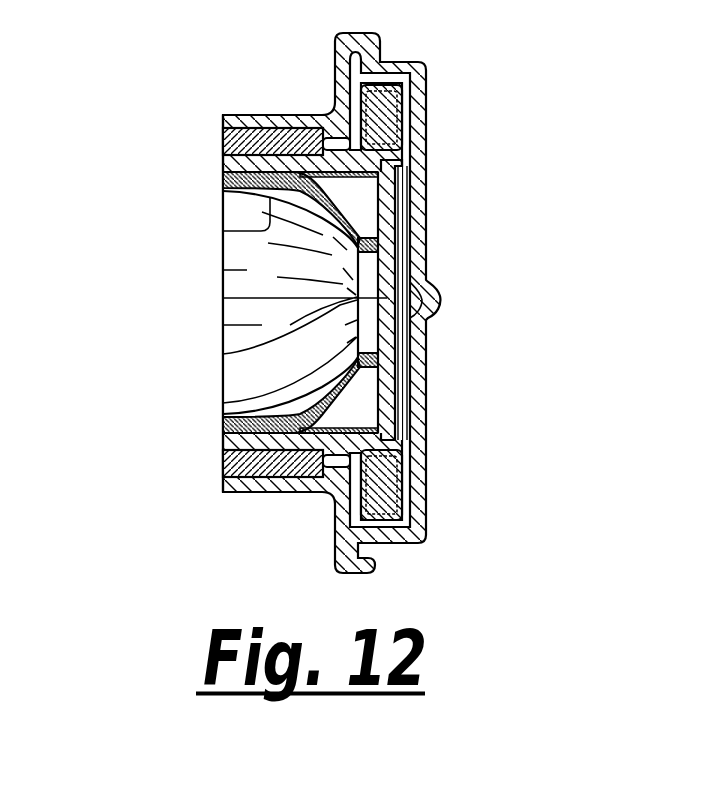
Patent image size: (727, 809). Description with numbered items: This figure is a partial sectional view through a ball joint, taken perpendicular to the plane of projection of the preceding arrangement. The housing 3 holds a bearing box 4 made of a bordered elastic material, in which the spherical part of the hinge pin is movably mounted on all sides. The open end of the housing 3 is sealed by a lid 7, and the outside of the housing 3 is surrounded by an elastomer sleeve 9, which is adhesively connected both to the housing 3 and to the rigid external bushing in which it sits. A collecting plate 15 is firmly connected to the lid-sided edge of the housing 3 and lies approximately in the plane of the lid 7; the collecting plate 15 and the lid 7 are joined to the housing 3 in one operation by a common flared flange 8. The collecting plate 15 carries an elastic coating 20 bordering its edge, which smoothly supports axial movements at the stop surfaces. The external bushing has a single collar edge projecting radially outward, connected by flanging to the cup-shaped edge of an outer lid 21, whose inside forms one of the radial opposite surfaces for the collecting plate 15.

The coating 20 is at (342, 106).
The housing 3 is at (223, 158).
The bearing box 4 is at (262, 233).
The lid 7 is at (223, 356).
The elastomer sleeve 9 is at (223, 460).
The flared flange 8 is at (392, 438).
The collecting plate 15 is at (388, 478).
The outer lid 21 is at (420, 535).